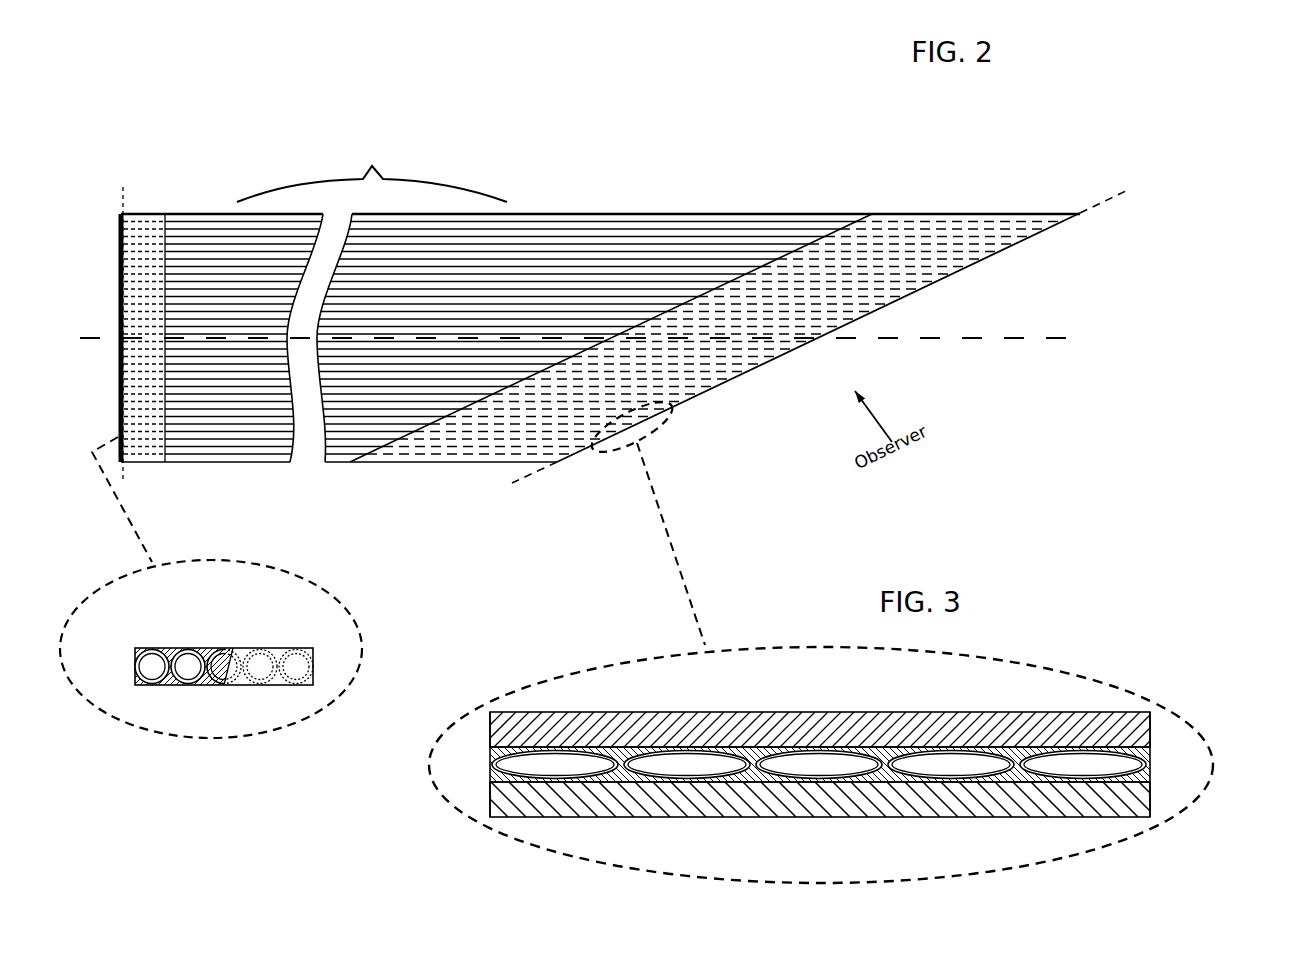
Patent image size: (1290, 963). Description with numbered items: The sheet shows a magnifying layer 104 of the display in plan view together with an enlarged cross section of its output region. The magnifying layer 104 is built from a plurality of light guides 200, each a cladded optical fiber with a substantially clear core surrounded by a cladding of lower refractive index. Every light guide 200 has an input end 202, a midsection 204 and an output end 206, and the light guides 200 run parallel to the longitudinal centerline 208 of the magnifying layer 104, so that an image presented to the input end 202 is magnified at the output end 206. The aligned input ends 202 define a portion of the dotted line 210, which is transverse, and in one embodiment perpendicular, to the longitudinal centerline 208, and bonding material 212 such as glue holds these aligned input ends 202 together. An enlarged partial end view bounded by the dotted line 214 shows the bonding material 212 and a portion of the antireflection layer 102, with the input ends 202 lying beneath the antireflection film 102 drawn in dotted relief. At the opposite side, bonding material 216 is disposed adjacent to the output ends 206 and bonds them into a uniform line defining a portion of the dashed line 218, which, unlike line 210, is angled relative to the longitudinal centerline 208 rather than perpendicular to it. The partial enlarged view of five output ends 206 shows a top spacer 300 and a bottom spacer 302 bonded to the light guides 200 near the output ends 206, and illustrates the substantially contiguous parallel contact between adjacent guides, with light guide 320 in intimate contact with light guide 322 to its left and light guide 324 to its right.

In FIG. 2, the antireflection layer 102 is at (119, 266).
In FIG. 2, the magnifying layer 104 is at (704, 142).
In FIG. 2, the light guide 200 is at (545, 210).
In FIG. 3, the light guide 200 is at (1155, 769).
In FIG. 2, the input end 202 is at (128, 213).
In FIG. 2, the midsection 204 is at (372, 169).
In FIG. 2, the output end 206 is at (1078, 213).
In FIG. 3, the output end 206 is at (1120, 770).
In FIG. 2, the longitudinal centerline 208 is at (602, 340).
In FIG. 2, the dotted line 210 is at (115, 325).
In FIG. 2, the bonding material 212 is at (140, 433).
In FIG. 2, the dotted line 214 is at (290, 572).
In FIG. 2, the bonding material 216 is at (836, 232).
In FIG. 3, the bonding material 216 is at (490, 775).
In FIG. 2, the dashed line 218 is at (838, 326).
In FIG. 3, the top spacer 300 is at (832, 720).
In FIG. 3, the bottom spacer 302 is at (845, 805).
In FIG. 3, the light guide 320 is at (805, 775).
In FIG. 3, the light guide 322 is at (673, 775).
In FIG. 3, the light guide 324 is at (936, 775).